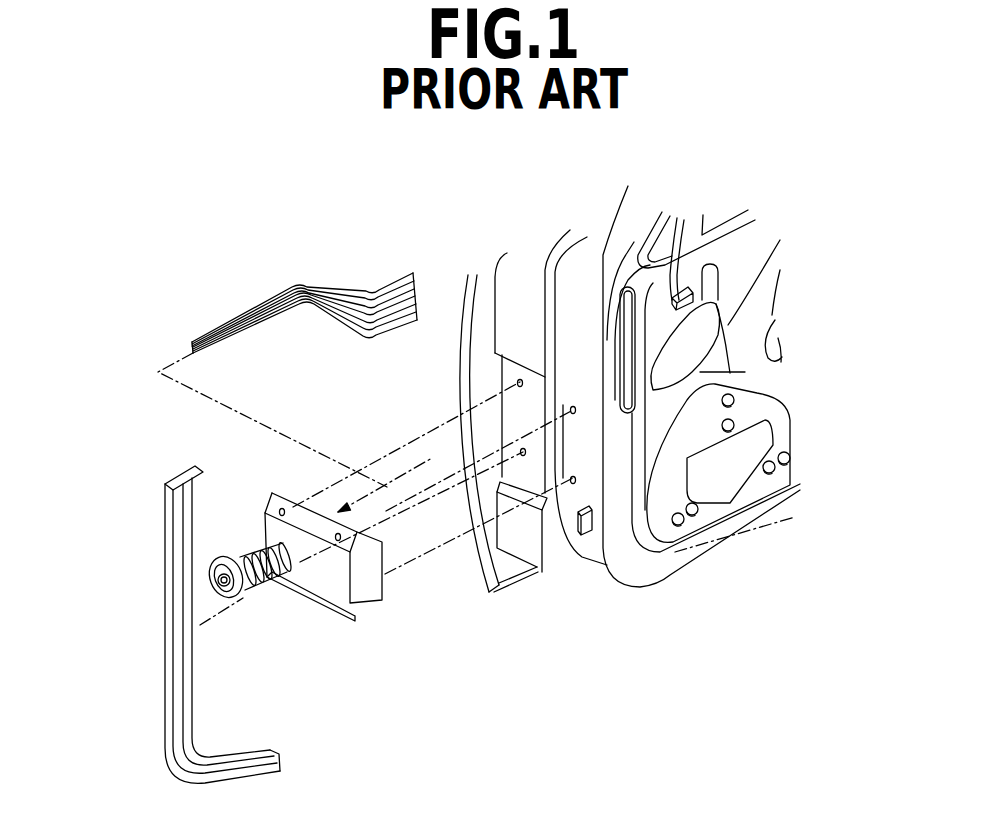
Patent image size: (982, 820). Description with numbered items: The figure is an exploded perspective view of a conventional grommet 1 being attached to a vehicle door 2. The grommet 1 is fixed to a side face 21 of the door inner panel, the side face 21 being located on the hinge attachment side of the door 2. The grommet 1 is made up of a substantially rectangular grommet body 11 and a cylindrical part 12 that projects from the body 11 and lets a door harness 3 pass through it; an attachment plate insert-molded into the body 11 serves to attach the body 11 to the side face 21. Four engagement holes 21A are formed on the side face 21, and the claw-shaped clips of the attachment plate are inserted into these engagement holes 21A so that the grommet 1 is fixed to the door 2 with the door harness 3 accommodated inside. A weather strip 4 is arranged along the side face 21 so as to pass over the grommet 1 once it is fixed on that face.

The grommet 1 is at (323, 626).
The grommet body 11 is at (310, 582).
The cylindrical part 12 is at (265, 583).
The vehicle door 2 is at (628, 594).
The side face 21 is at (530, 458).
The engagement holes 21A is at (520, 383).
The door harness 3 is at (247, 310).
The weather strip 4 is at (167, 695).